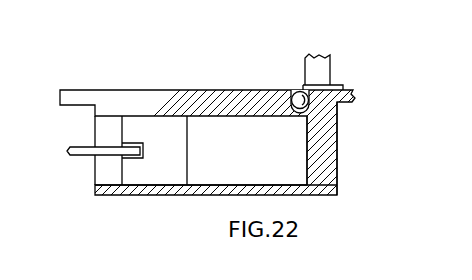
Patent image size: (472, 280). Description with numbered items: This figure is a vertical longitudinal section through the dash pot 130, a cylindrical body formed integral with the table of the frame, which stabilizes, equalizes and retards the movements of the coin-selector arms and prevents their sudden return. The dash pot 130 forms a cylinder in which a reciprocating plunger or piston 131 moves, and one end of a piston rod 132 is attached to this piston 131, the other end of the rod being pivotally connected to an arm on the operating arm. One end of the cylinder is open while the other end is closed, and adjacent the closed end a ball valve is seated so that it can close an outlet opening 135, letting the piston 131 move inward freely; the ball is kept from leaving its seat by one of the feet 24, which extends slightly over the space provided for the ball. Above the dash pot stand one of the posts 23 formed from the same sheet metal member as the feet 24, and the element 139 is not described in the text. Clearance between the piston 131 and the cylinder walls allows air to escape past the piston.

The dash pot 130 is at (336, 167).
The outlet opening 135 is at (302, 117).
The ball 139 is at (296, 92).
The posts 23 is at (324, 65).
The feet 24 is at (335, 90).
The piston 131 is at (158, 170).
The piston rod 132 is at (82, 158).